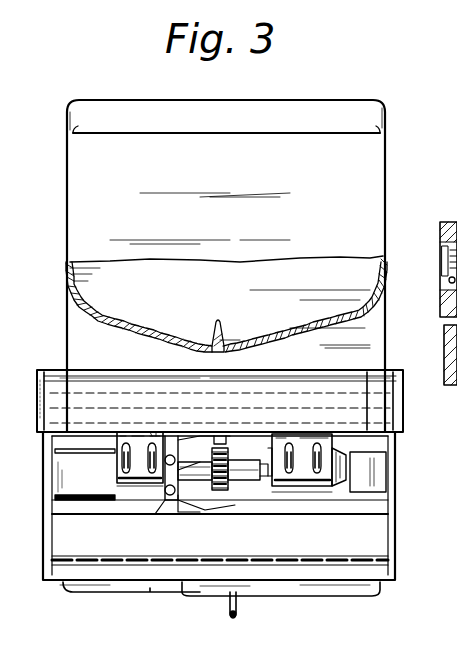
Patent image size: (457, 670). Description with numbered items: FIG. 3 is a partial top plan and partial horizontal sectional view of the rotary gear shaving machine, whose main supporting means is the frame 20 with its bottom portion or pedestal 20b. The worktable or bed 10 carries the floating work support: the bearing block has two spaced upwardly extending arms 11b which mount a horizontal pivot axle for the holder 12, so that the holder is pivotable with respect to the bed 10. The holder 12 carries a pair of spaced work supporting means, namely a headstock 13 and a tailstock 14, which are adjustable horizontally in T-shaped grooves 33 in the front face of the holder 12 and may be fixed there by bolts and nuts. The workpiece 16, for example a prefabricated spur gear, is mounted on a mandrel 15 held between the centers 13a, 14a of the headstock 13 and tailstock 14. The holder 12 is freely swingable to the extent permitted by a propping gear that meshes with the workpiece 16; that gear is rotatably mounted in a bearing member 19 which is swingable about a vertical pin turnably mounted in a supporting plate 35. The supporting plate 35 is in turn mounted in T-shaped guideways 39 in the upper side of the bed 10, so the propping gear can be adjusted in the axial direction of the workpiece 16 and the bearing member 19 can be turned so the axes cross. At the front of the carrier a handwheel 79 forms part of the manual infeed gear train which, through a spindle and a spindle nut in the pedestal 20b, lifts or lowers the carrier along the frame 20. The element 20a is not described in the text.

The water tank 20a is at (70, 163).
The frame 20 is at (72, 312).
The arms 11b is at (416, 425).
The holder 12 is at (93, 388).
The workpiece 16 is at (222, 436).
The T-shaped grooves 33 is at (100, 448).
The headstock 13 is at (130, 490).
The center 13a is at (168, 498).
The supporting plate 35 is at (196, 506).
The bearing member 19 is at (220, 492).
The mandrel 15 is at (245, 482).
The center 14a is at (262, 482).
The tailstock 14 is at (330, 490).
The T-shaped guideways 39 is at (388, 490).
The bed 10 is at (395, 534).
The pedestal 20b is at (136, 590).
The handwheel 79 is at (217, 588).